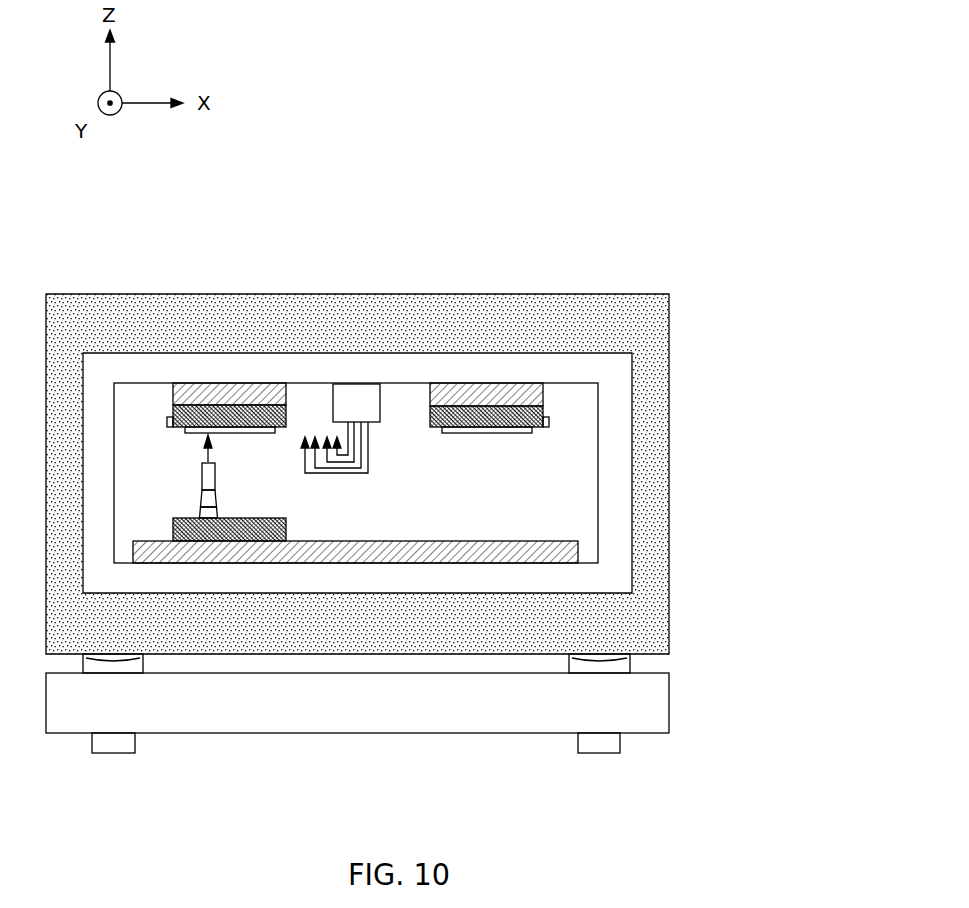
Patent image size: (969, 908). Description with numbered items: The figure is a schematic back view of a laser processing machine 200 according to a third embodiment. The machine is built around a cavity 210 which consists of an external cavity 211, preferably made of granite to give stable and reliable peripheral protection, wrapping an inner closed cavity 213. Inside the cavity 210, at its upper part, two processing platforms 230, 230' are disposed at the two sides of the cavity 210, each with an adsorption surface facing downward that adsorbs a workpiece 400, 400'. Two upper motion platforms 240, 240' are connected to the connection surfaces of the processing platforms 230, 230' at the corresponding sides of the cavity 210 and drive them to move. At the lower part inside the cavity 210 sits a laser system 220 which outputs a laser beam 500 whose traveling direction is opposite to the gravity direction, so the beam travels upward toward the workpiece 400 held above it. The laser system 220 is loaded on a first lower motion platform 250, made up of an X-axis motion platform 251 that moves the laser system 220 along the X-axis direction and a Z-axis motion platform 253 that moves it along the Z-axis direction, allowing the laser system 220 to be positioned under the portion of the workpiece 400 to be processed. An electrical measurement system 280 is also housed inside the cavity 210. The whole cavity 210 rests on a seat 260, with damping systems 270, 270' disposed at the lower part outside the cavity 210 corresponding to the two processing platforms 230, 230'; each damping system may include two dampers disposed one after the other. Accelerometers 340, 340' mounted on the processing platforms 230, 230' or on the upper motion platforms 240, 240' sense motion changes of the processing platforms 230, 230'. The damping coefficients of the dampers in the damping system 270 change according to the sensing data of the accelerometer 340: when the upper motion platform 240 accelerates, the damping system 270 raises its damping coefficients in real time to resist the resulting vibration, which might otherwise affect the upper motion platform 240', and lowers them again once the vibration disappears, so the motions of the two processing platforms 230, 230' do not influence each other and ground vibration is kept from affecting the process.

The laser processing machine 200 is at (92, 208).
The cavity 210 is at (418, 432).
The external cavity 211 is at (610, 313).
The closed cavity 213 is at (617, 373).
The laser system 220 is at (218, 500).
The processing platform 230 is at (181, 327).
The processing platform 230' is at (519, 316).
The upper motion platform 240 is at (215, 326).
The upper motion platform 240' is at (485, 325).
The first lower motion platform 250 is at (355, 516).
The X-axis motion platform 251 is at (360, 541).
The Z-axis motion platform 253 is at (287, 523).
The seat 260 is at (192, 735).
The damping system 270 is at (84, 726).
The damping system 270' is at (633, 729).
The electrical measurement system 280 is at (333, 398).
The accelerometer 340 is at (149, 441).
The accelerometer 340' is at (572, 442).
The workpiece 400 is at (205, 469).
The workpiece 400' is at (460, 454).
The laser beam 500 is at (212, 445).